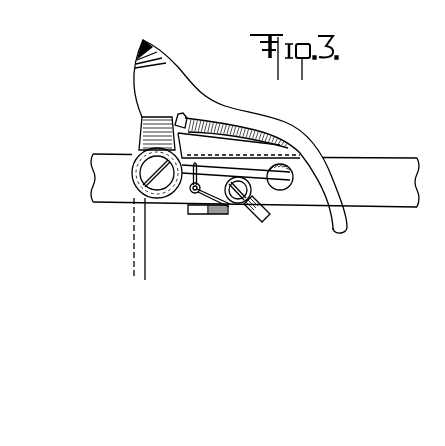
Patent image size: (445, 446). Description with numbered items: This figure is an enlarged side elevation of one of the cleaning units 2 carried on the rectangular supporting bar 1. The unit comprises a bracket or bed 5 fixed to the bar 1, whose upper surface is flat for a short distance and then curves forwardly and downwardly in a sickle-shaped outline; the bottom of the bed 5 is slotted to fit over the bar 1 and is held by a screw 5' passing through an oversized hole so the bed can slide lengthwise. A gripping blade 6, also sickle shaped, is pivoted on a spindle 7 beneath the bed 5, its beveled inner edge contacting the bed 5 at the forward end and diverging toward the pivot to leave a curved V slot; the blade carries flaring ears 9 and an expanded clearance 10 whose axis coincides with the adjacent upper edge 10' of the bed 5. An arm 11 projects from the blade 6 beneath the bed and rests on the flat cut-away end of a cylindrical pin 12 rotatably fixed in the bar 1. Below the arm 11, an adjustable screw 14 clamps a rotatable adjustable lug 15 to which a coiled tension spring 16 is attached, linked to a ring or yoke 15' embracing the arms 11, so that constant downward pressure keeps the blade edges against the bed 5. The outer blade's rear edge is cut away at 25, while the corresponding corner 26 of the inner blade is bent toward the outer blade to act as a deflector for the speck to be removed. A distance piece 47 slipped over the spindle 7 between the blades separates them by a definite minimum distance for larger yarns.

The supporting bar 1 is at (255, 180).
The cleaning unit 2 is at (188, 70).
The bracket or bed 5 is at (243, 147).
The screw 5' is at (199, 211).
The gripping blade 6 is at (137, 87).
The spindle 7 is at (132, 170).
The ears 9 is at (147, 42).
The clearance 10 is at (145, 133).
The upper edge of bed 10' is at (239, 145).
The arm 11 is at (262, 178).
The cylindrical pin 12 is at (289, 190).
The adjustable screw 14 is at (240, 203).
The rotatable adjustable lug 15 is at (259, 222).
The ring or yoke 15' is at (175, 194).
The coiled tension spring 16 is at (195, 214).
The cut away portion 25 is at (187, 118).
The corner 26 is at (182, 113).
The distance piece 47 is at (134, 245).